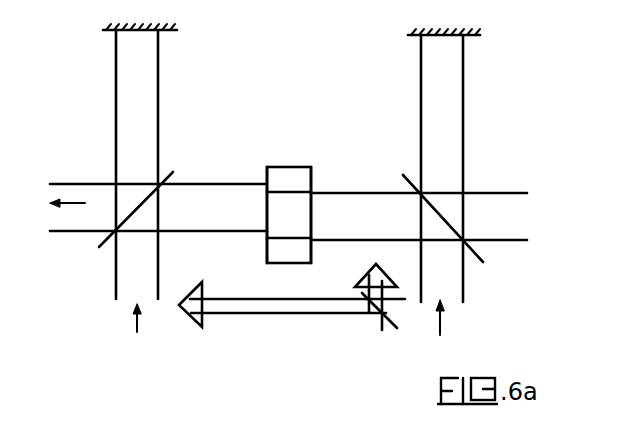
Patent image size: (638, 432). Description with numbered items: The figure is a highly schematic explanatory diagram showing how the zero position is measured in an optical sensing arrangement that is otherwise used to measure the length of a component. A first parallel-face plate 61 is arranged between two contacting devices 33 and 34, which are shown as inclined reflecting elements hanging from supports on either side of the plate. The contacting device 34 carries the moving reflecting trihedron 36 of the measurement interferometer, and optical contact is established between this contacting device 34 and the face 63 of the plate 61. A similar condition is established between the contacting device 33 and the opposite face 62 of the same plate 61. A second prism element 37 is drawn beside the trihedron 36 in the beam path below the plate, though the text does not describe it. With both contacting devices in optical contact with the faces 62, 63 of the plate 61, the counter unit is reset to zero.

The contacting device 33 is at (475, 276).
The contacting device 34 is at (93, 273).
The moving reflecting trihedron 36 is at (197, 316).
The deflecting prism 37 is at (395, 262).
The first parallel-face plate 61 is at (297, 168).
The face 62 is at (267, 170).
The face 63 is at (312, 172).